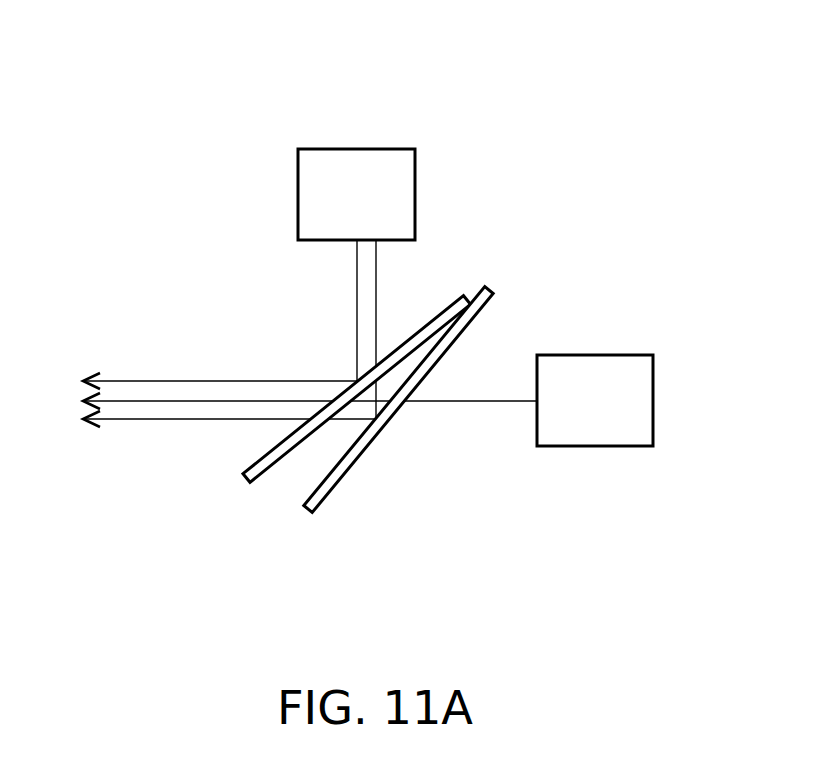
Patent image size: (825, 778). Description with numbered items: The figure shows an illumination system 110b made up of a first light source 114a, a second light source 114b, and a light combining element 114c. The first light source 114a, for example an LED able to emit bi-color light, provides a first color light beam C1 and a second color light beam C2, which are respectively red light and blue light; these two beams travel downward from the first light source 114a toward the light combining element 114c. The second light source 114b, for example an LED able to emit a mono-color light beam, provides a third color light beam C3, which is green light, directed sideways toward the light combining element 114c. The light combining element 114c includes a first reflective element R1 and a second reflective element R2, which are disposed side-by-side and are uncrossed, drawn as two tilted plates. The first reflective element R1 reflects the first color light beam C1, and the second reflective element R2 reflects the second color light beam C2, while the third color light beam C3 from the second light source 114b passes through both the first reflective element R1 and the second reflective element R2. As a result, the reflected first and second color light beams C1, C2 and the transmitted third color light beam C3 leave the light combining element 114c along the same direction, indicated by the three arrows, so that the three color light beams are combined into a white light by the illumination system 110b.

The first light source 114a is at (356, 177).
The second light source 114b is at (613, 378).
The light combining element 114c is at (437, 263).
The first reflective element R1 is at (459, 294).
The second reflective element R2 is at (497, 297).
The first color light beam C1 is at (355, 318).
The second color light beam C2 is at (382, 320).
The third color light beam C3 is at (499, 401).
The illumination system 110b is at (632, 542).